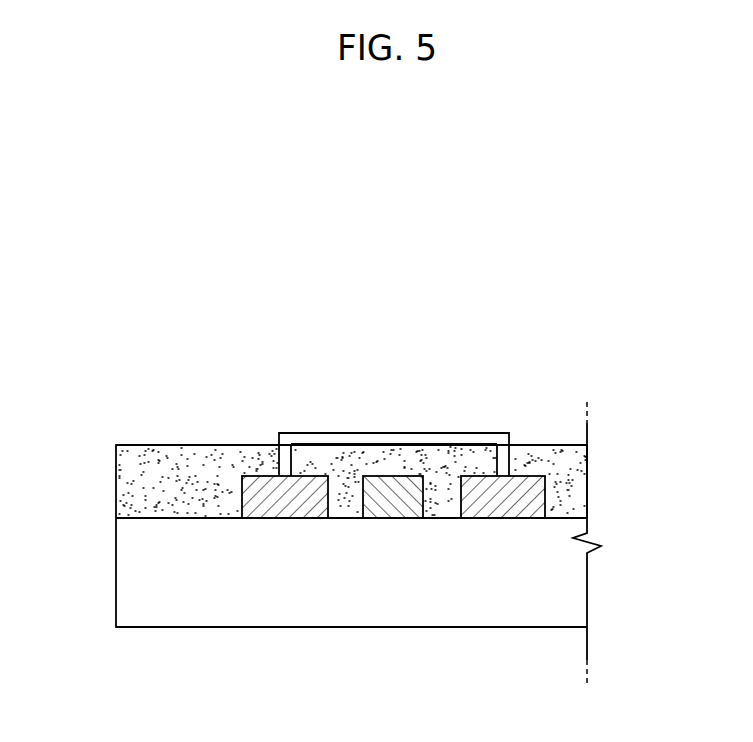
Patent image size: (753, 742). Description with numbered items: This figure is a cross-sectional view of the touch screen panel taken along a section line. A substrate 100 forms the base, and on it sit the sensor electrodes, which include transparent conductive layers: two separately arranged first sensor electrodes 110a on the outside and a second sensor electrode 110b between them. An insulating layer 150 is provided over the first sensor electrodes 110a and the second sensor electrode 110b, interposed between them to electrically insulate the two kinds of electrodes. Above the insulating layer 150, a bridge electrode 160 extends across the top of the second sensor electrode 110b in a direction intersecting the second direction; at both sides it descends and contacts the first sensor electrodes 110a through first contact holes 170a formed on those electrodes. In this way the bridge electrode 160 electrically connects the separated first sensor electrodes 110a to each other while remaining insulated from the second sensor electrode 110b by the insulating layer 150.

The substrate 100 is at (553, 582).
The first sensor electrodes 110a is at (288, 514).
The second sensor electrode 110b is at (392, 514).
The insulating layer 150 is at (142, 484).
The bridge electrode 160 is at (385, 432).
The first contact holes 170a is at (285, 459).